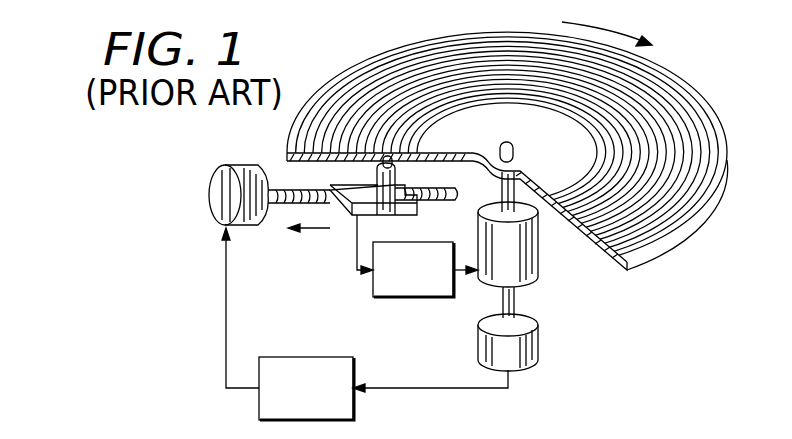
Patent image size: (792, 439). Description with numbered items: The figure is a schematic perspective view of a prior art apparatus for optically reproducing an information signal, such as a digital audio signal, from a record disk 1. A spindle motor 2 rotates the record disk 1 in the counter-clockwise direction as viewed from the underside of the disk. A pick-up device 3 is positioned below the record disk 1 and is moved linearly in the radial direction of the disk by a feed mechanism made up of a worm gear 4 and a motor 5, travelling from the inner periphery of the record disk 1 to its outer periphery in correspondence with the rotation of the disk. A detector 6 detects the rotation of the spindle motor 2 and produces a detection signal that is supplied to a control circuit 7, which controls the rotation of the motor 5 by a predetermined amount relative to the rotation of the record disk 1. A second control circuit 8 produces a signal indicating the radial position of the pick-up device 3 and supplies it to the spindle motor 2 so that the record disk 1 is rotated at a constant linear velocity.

The record disk 1 is at (697, 194).
The spindle motor 2 is at (539, 266).
The pick-up device 3 is at (398, 212).
The worm gear 4 is at (268, 215).
The motor 5 is at (247, 228).
The detector 6 is at (540, 350).
The control circuit 7 is at (325, 418).
The second control circuit 8 is at (438, 300).